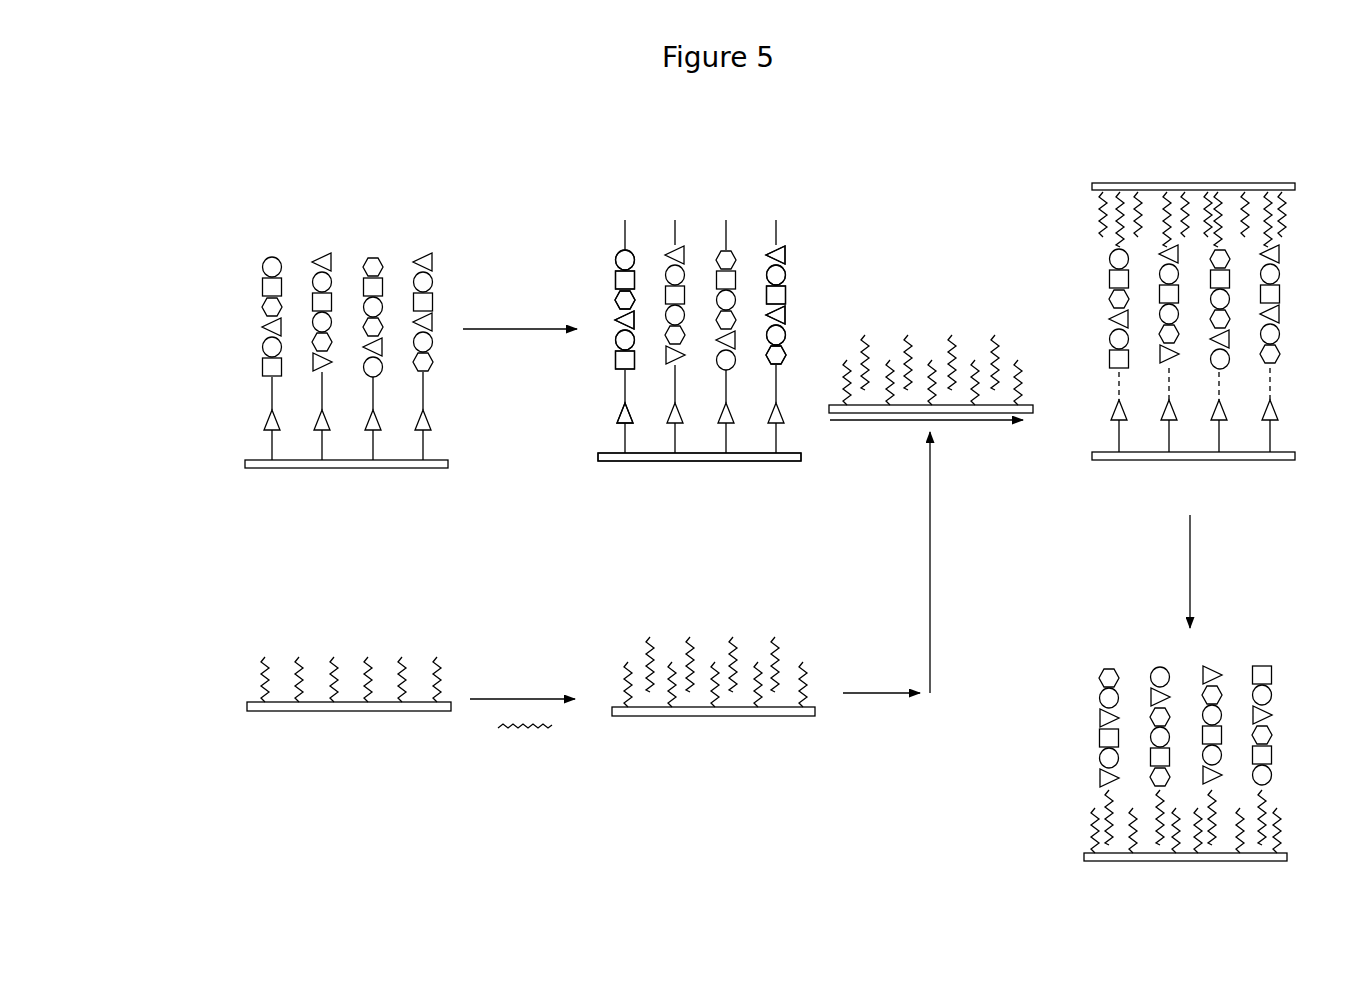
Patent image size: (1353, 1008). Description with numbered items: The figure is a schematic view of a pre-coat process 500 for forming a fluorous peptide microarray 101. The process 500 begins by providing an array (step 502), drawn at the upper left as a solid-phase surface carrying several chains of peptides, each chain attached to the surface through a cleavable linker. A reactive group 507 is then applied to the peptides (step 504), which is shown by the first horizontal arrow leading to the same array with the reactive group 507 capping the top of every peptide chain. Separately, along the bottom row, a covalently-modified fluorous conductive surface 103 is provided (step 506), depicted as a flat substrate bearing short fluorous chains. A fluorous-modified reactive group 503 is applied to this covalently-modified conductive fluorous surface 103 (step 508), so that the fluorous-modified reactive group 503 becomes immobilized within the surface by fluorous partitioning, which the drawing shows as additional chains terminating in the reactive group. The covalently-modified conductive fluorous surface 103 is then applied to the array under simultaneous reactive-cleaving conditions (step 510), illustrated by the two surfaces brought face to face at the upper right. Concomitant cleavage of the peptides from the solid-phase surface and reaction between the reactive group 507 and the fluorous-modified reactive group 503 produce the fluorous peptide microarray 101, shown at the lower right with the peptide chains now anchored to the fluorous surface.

The fluorous peptide microarray 101 is at (1230, 153).
The covalently-modified conductive fluorous surface 103 is at (387, 735).
The pre-coat process 500 is at (258, 845).
The step of providing an array 502 is at (287, 387).
The fluorous-modified reactive group 503 is at (535, 740).
The step of applying a reactive group 504 is at (487, 267).
The step of providing the fluorous surface 506 is at (272, 737).
The reactive group 507 is at (533, 368).
The step of applying the fluorous-modified reactive group 508 is at (583, 813).
The step of applying the fluorous surface to the array 510 is at (912, 267).